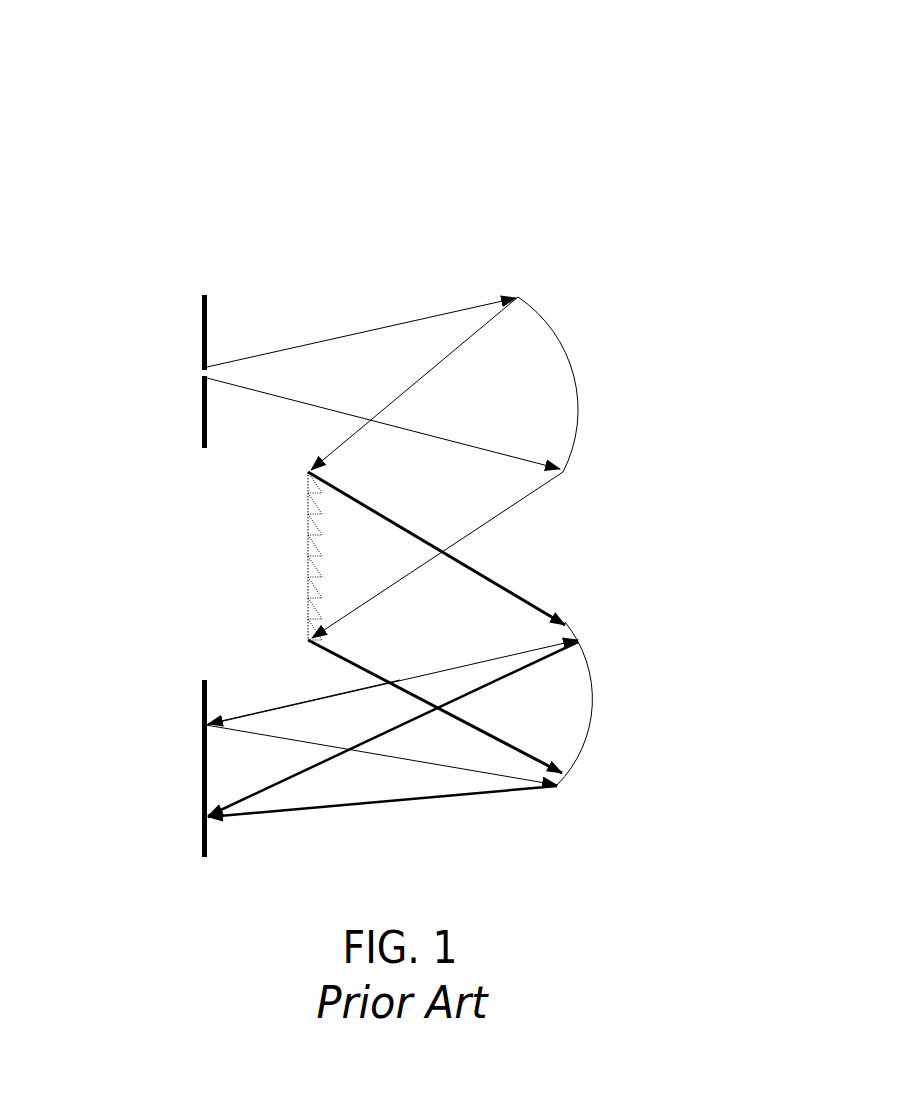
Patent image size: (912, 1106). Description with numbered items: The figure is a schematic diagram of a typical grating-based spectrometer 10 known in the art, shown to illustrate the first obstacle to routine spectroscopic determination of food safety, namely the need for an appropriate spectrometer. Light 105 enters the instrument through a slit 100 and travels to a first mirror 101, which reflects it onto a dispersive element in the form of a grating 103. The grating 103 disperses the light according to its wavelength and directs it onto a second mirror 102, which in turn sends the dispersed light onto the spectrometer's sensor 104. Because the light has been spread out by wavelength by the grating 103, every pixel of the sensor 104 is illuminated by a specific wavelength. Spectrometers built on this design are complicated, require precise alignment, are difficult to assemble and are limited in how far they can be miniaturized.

The spectrometer 10 is at (148, 123).
The slit 100 is at (195, 372).
The first mirror 101 is at (597, 375).
The second mirror 102 is at (617, 721).
The grating 103 is at (298, 553).
The sensor 104 is at (200, 772).
The light 105 is at (358, 310).